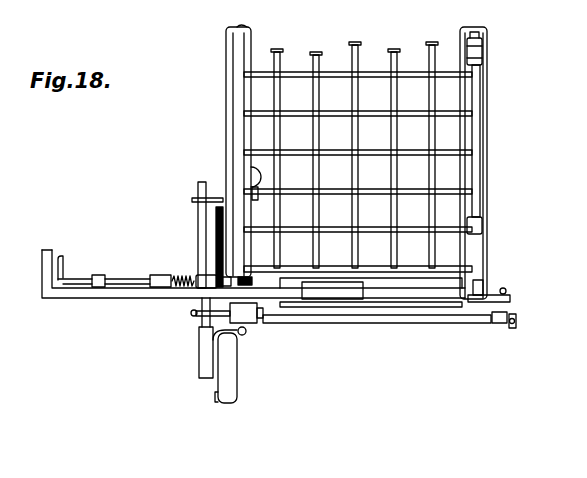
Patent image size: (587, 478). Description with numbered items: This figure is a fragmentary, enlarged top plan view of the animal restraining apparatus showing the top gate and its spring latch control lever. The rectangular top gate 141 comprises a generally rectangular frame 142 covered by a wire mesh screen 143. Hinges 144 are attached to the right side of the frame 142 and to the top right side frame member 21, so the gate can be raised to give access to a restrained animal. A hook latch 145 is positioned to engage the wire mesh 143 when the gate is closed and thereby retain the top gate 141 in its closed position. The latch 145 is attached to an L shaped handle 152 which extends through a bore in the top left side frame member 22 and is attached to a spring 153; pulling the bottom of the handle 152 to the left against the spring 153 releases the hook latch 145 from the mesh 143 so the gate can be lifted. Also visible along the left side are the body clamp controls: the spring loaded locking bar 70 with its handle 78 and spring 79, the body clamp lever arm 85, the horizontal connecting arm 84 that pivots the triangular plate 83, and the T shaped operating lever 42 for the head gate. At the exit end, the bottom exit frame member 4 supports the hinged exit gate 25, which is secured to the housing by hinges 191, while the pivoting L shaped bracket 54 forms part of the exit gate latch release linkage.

The top gate 141 is at (373, 40).
The hinges 144 is at (483, 48).
The top right side frame member 21 is at (489, 137).
The frame 142 is at (481, 170).
The top left side frame member 22 is at (227, 128).
The hook latch 145 is at (250, 170).
The wire mesh screen 143 is at (316, 188).
The operating lever 42 is at (198, 183).
The handle 152 is at (192, 199).
The spring 153 is at (216, 227).
The handle 78 is at (64, 265).
The spring loaded locking bar 70 is at (118, 276).
The spring 79 is at (176, 279).
The body clamp lever arm 85 is at (352, 294).
The triangular plate 83 is at (503, 292).
The hinges 191 is at (296, 345).
The bottom exit frame member 4 is at (350, 328).
The horizontal connecting arm 84 is at (428, 322).
The L shaped bracket 54 is at (515, 326).
The exit gate 25 is at (215, 393).